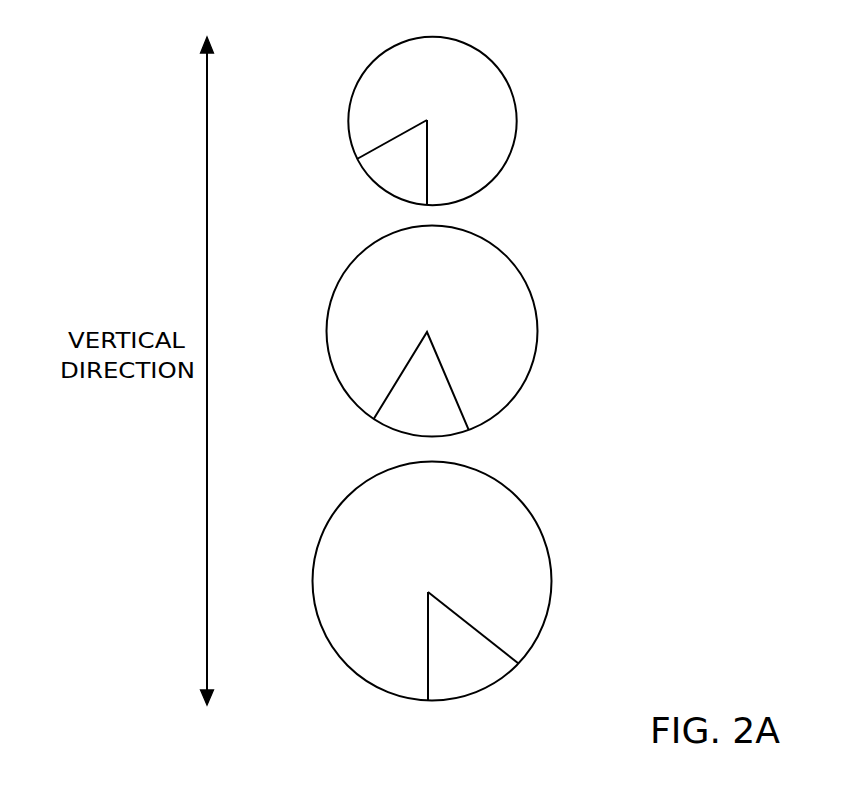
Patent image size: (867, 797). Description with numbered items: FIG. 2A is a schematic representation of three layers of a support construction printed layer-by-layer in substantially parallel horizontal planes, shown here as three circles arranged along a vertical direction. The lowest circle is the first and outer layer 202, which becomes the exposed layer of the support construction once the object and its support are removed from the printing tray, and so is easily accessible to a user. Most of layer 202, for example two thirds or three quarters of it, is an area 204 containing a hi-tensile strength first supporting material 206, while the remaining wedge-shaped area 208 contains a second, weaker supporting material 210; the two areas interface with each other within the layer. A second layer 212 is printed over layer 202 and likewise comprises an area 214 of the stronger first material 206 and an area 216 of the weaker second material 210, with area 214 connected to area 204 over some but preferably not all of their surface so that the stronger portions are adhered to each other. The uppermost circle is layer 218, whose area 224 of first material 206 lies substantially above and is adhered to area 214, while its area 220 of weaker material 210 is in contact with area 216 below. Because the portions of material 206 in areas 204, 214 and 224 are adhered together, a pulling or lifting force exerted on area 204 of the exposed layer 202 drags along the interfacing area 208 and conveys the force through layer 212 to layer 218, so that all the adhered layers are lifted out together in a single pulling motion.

The layer 202 is at (465, 581).
The area 204 is at (538, 617).
The first supporting material 206 is at (454, 90).
The area 208 is at (500, 667).
The second supporting material 210 is at (430, 413).
The second layer 212 is at (473, 331).
The area 214 is at (525, 360).
The area 216 is at (387, 432).
The layer 218 is at (479, 116).
The area 220 is at (363, 167).
The area 224 is at (497, 167).